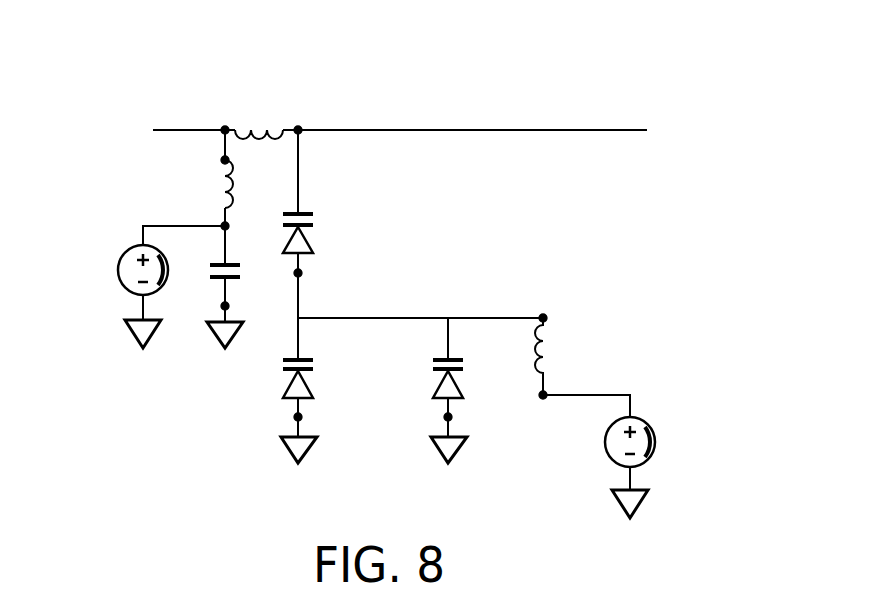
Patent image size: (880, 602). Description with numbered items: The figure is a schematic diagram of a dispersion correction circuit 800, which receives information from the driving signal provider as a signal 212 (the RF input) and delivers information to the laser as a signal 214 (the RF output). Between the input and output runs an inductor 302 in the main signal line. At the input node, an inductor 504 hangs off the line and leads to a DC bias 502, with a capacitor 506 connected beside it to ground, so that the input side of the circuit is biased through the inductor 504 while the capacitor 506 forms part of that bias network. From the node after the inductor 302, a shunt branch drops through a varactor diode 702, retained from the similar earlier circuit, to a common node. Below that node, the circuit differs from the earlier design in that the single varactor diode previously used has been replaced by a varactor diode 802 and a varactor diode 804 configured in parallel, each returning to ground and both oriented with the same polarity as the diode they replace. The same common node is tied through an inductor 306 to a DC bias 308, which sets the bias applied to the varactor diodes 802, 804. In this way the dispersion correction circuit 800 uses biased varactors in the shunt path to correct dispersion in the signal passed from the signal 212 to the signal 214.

The dispersion correction circuit 800 is at (705, 54).
The signal 212 is at (178, 135).
The signal 214 is at (600, 133).
The inductor 302 is at (265, 112).
The inductor 306 is at (550, 363).
The DC bias 308 is at (605, 443).
The DC bias 502 is at (118, 270).
The inductor 504 is at (228, 190).
The capacitor 506 is at (210, 275).
The varactor diode 702 is at (332, 200).
The varactor diode 802 is at (283, 368).
The varactor diode 804 is at (433, 368).